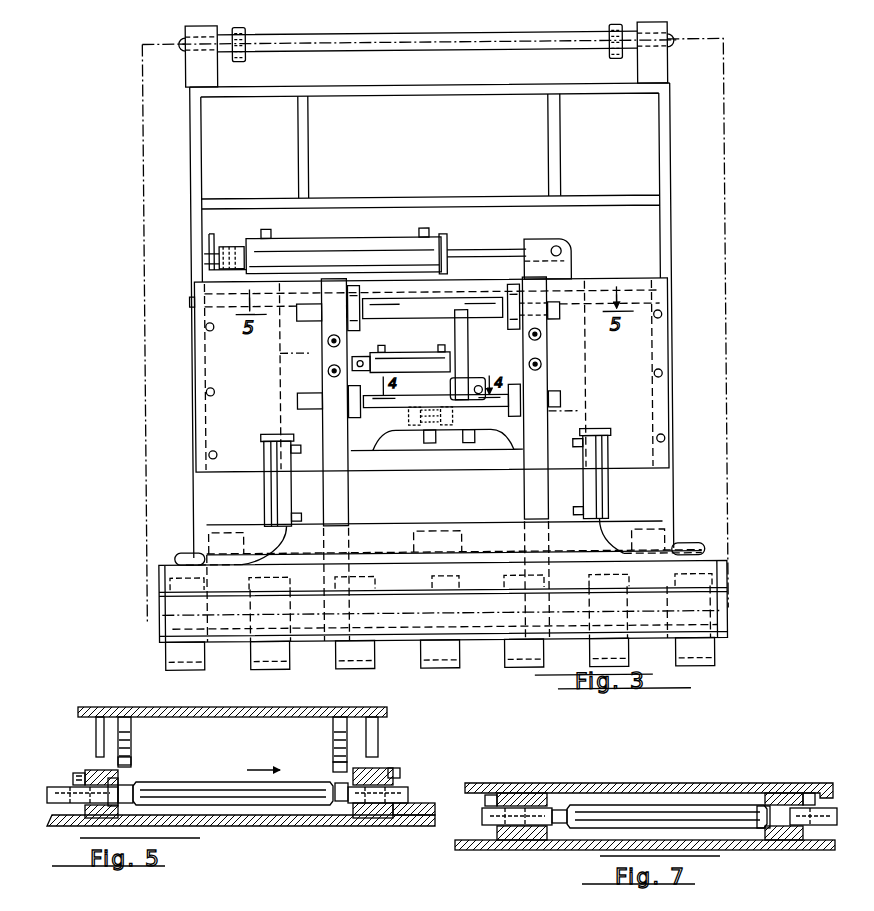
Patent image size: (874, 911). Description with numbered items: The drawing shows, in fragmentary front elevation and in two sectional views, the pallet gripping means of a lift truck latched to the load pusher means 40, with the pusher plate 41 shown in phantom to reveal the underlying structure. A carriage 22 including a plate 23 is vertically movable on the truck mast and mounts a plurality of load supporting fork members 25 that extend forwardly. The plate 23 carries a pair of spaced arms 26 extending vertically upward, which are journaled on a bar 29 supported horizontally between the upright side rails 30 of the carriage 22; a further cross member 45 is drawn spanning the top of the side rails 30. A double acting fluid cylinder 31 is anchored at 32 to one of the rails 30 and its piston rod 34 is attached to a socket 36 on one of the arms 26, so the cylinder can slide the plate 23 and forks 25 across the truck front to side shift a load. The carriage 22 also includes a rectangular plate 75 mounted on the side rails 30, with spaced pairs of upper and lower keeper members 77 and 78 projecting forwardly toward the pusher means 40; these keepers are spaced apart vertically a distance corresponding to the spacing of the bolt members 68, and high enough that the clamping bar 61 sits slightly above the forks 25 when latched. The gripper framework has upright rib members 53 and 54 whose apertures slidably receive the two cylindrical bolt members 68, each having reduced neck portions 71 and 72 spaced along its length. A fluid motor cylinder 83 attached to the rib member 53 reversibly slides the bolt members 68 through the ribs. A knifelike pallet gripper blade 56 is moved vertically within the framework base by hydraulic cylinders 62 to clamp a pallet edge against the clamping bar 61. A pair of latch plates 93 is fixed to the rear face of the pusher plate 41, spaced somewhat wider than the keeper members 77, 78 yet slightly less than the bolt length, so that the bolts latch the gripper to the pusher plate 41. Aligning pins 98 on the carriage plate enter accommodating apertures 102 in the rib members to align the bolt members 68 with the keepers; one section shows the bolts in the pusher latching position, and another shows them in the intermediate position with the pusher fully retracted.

In FIG. 5, the carriage 22 is at (252, 706).
In FIG. 7, the carriage 22 is at (700, 782).
In FIG. 3, the plate 23 is at (488, 530).
In FIG. 3, the load supporting fork members 25 is at (163, 666).
In FIG. 3, the spaced arms 26 is at (280, 390).
In FIG. 3, the bar 29 is at (670, 292).
In FIG. 3, the upright side rails 30 is at (203, 150).
In FIG. 3, the double acting fluid cylinder 31 is at (337, 246).
In FIG. 3, the anchor 32 is at (226, 245).
In FIG. 3, the piston rod 34 is at (490, 250).
In FIG. 3, the socket 36 is at (570, 265).
In FIG. 3, the load pusher means 40 is at (728, 110).
In FIG. 5, the pusher plate 41 is at (290, 826).
In FIG. 7, the pusher plate 41 is at (560, 850).
In FIG. 3, the top cross rod 45 is at (578, 33).
In FIG. 3, the upright rib member 53 is at (350, 452).
In FIG. 5, the upright rib member 53 is at (120, 775).
In FIG. 7, the upright rib member 53 is at (527, 795).
In FIG. 5, the upright rib member 54 is at (392, 766).
In FIG. 7, the upright rib member 54 is at (790, 793).
In FIG. 3, the pallet gripper blade 56 is at (424, 598).
In FIG. 3, the clamping bar 61 is at (160, 640).
In FIG. 3, the hydraulic cylinders 62 is at (263, 497).
In FIG. 3, the bolt members 68 is at (428, 309).
In FIG. 5, the bolt members 68 is at (230, 782).
In FIG. 7, the bolt members 68 is at (625, 812).
In FIG. 5, the neck portion 71 is at (133, 786).
In FIG. 5, the neck portion 72 is at (340, 784).
In FIG. 3, the rectangular plate 75 is at (195, 356).
In FIG. 3, the upper keeper members 77 is at (362, 330).
In FIG. 5, the upper keeper members 77 is at (133, 760).
In FIG. 7, the upper keeper members 77 is at (560, 810).
In FIG. 3, the lower keeper members 78 is at (506, 330).
In FIG. 5, the lower keeper members 78 is at (333, 765).
In FIG. 7, the lower keeper members 78 is at (755, 793).
In FIG. 3, the cylinder 83 is at (401, 359).
In FIG. 3, the latch plates 93 is at (433, 378).
In FIG. 5, the latch plates 93 is at (85, 772).
In FIG. 7, the latch plates 93 is at (490, 795).
In FIG. 5, the aligning pins 98 is at (96, 730).
In FIG. 5, the apertures 102 is at (90, 770).